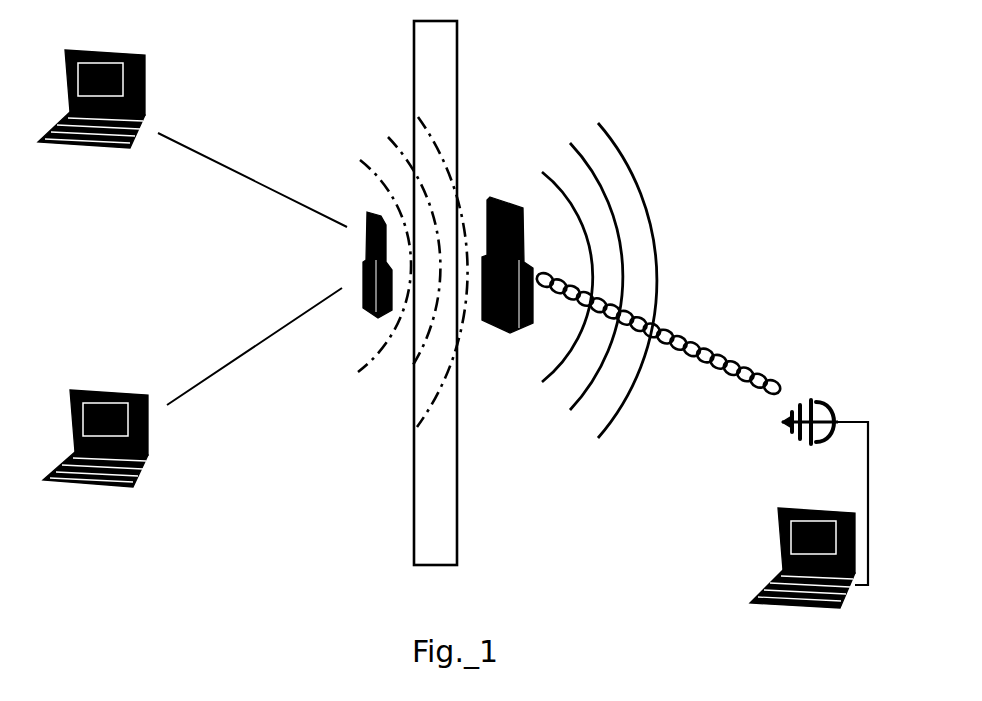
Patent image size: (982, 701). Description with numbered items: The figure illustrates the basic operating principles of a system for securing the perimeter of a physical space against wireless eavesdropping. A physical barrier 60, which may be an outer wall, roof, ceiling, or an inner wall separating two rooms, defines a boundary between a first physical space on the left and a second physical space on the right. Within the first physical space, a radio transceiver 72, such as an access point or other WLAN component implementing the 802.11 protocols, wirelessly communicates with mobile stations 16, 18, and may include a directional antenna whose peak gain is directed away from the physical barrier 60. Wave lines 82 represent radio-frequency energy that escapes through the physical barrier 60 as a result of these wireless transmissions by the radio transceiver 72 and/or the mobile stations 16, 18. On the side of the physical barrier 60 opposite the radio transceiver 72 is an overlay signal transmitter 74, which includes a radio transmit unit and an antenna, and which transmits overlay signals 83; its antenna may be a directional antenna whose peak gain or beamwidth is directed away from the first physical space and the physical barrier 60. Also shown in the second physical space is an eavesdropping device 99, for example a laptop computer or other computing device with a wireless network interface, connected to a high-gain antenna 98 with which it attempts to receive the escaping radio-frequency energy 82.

The mobile station 16 is at (93, 485).
The mobile station 18 is at (65, 145).
The physical barrier 60 is at (457, 150).
The radio transceiver 72 is at (380, 208).
The overlay signal transmitter 74 is at (522, 197).
The wave lines 82 is at (398, 384).
The overlay signals 83 is at (572, 405).
The high-gain antenna 98 is at (826, 400).
The eavesdropping device 99 is at (803, 607).